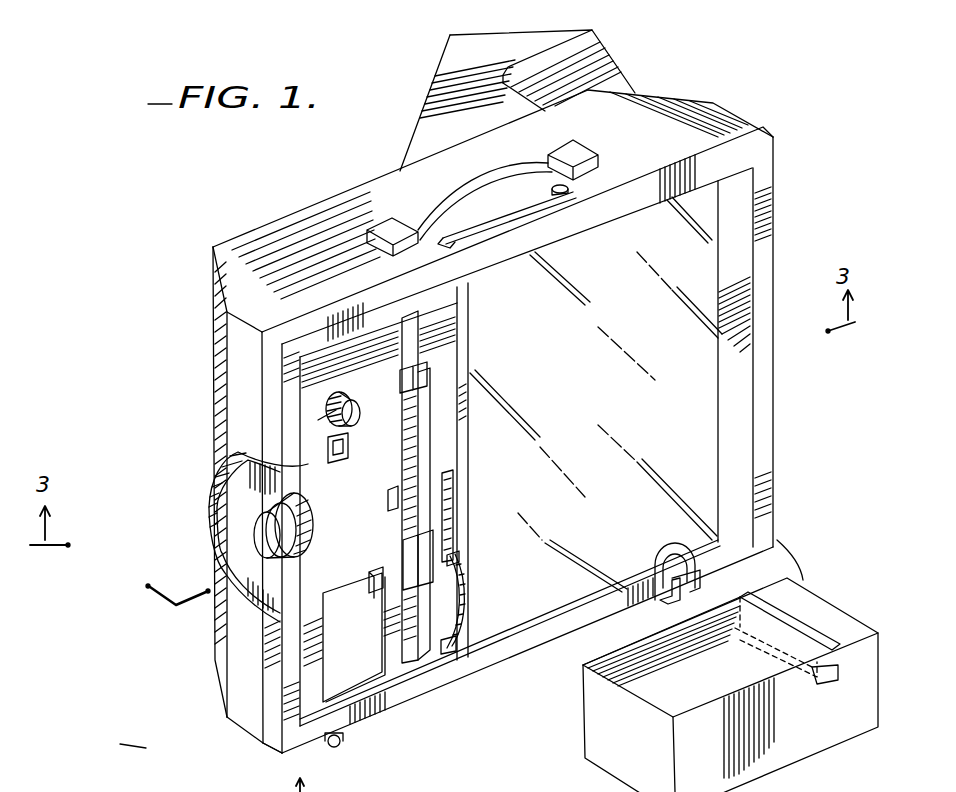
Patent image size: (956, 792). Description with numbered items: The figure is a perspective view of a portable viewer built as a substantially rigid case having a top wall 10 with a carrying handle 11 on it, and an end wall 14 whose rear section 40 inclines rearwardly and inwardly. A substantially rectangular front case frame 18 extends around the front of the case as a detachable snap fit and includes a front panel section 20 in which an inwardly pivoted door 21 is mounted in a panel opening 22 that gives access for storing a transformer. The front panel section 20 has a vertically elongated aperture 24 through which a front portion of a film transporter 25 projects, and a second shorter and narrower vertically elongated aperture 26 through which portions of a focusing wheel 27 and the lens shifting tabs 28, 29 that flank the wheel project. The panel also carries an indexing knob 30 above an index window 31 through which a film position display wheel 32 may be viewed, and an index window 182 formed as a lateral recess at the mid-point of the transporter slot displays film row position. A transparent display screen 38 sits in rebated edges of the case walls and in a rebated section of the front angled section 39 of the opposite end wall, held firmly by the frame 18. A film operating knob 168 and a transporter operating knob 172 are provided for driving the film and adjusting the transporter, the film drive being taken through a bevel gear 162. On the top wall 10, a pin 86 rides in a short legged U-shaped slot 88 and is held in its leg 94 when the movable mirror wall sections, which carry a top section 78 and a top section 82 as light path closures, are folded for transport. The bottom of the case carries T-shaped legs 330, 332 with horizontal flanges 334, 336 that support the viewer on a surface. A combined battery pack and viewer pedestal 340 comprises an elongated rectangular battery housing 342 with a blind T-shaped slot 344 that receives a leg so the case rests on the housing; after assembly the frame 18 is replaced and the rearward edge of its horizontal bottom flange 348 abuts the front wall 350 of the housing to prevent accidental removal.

The top wall 10 is at (280, 226).
The carrying handle 11 is at (438, 194).
The end wall 14 is at (236, 679).
The front case frame 18 is at (447, 675).
The front panel section 20 is at (366, 548).
The door 21 is at (366, 641).
The panel opening 22 is at (374, 577).
The vertically elongated aperture 24 is at (412, 336).
The film transporter 25 is at (394, 410).
The second vertically elongated aperture 26 is at (455, 482).
The focusing wheel 27 is at (464, 598).
The lens shifting tab 28 is at (458, 560).
The lens shifting tab 29 is at (457, 634).
The indexing knob 30 is at (338, 400).
The index window 31 is at (328, 448).
The film position display wheel 32 is at (349, 449).
The transparent display screen 38 is at (620, 393).
The front angled section 39 is at (744, 390).
The rear section 40 is at (214, 328).
The top section 78 is at (426, 108).
The top section 82 is at (545, 62).
The pin 86 is at (597, 166).
The U-shaped slot 88 is at (500, 226).
The leg 94 is at (396, 252).
The bevel gear 162 is at (160, 791).
The film operating knob 168 is at (308, 514).
The transporter operating knob 172 is at (257, 536).
The index window 182 is at (390, 493).
The T-shaped leg 330 is at (343, 745).
The T-shaped leg 332 is at (683, 597).
The horizontal flange 334 is at (668, 598).
The horizontal flange 336 is at (700, 577).
The combined battery pack and viewer pedestal 340 is at (822, 580).
The battery housing 342 is at (602, 663).
The T-shaped slot 344 is at (807, 628).
The horizontal bottom flange 348 is at (273, 753).
The front wall 350 is at (808, 742).